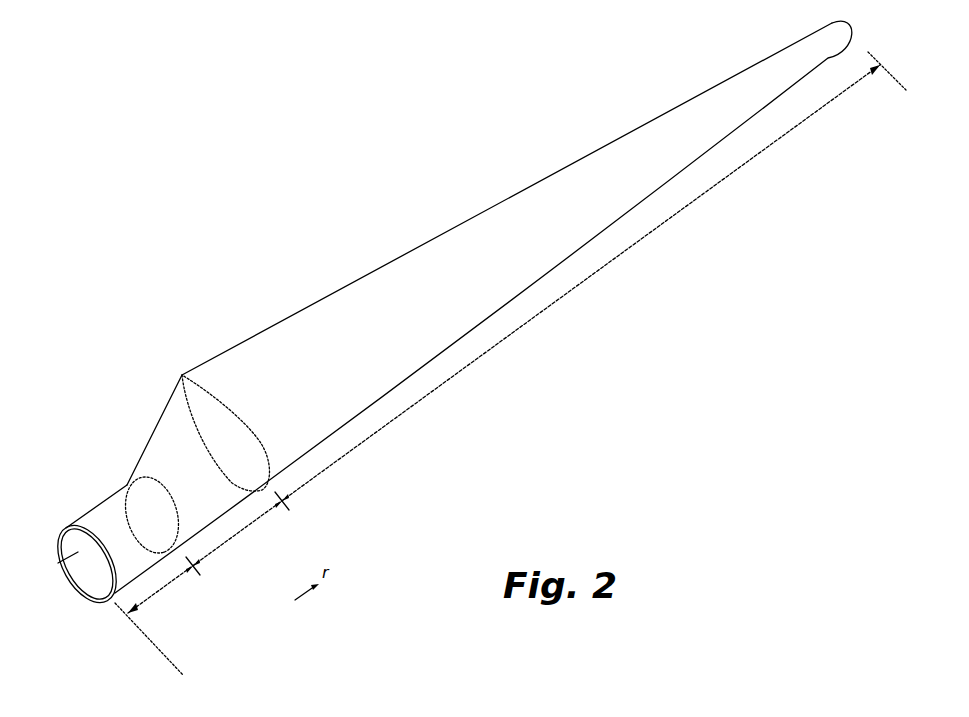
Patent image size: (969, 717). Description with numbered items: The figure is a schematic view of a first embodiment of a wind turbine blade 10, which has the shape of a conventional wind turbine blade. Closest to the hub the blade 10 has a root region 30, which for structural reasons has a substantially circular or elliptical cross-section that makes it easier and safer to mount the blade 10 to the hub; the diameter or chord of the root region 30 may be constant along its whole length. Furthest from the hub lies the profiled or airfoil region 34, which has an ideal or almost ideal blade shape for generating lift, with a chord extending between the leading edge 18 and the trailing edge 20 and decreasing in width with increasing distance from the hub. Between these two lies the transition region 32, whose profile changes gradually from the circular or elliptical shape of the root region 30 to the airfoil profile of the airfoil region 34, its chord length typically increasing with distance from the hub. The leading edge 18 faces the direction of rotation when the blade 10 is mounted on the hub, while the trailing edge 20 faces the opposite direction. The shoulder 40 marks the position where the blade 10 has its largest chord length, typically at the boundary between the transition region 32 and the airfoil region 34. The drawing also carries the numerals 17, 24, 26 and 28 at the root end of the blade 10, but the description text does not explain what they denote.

The wind turbine blade 10 is at (316, 208).
The root end 17 is at (52, 565).
The leading edge 18 is at (610, 224).
The trailing edge 20 is at (503, 199).
The root transition region 24 is at (89, 517).
The root end face 26 is at (92, 597).
The root edge 28 is at (75, 527).
The root region 30 is at (161, 589).
The transition region 32 is at (242, 533).
The airfoil region 34 is at (523, 328).
The shoulder 40 is at (182, 375).